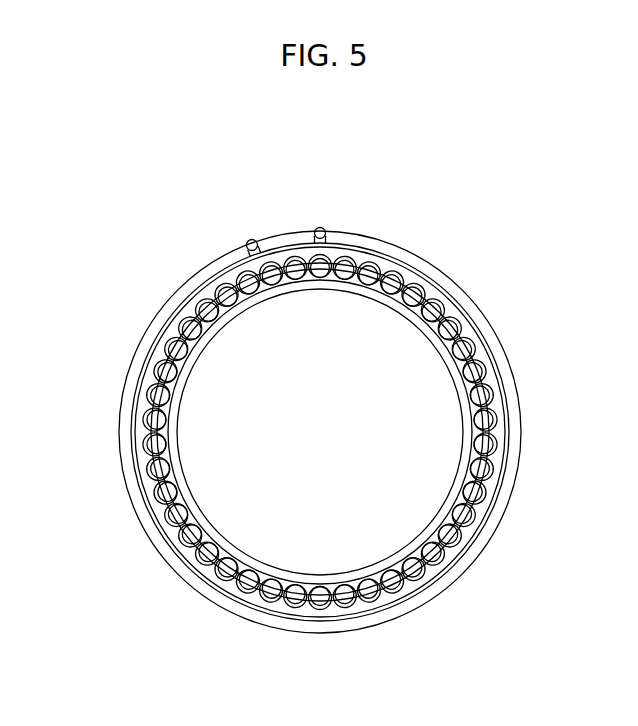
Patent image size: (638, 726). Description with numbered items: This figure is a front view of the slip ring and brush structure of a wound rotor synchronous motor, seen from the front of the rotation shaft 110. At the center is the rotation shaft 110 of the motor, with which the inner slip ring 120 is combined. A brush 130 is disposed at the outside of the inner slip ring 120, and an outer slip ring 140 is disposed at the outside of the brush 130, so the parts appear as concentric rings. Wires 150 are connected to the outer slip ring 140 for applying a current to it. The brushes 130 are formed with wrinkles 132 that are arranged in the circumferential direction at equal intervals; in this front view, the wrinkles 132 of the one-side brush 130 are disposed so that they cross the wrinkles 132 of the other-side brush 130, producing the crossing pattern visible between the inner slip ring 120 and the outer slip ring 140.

The rotation shaft 110 is at (418, 488).
The inner slip ring 120 is at (213, 568).
The brush 130 is at (150, 418).
The wrinkles 132 is at (180, 302).
The outer slip ring 140 is at (450, 297).
The wires 150 is at (313, 226).